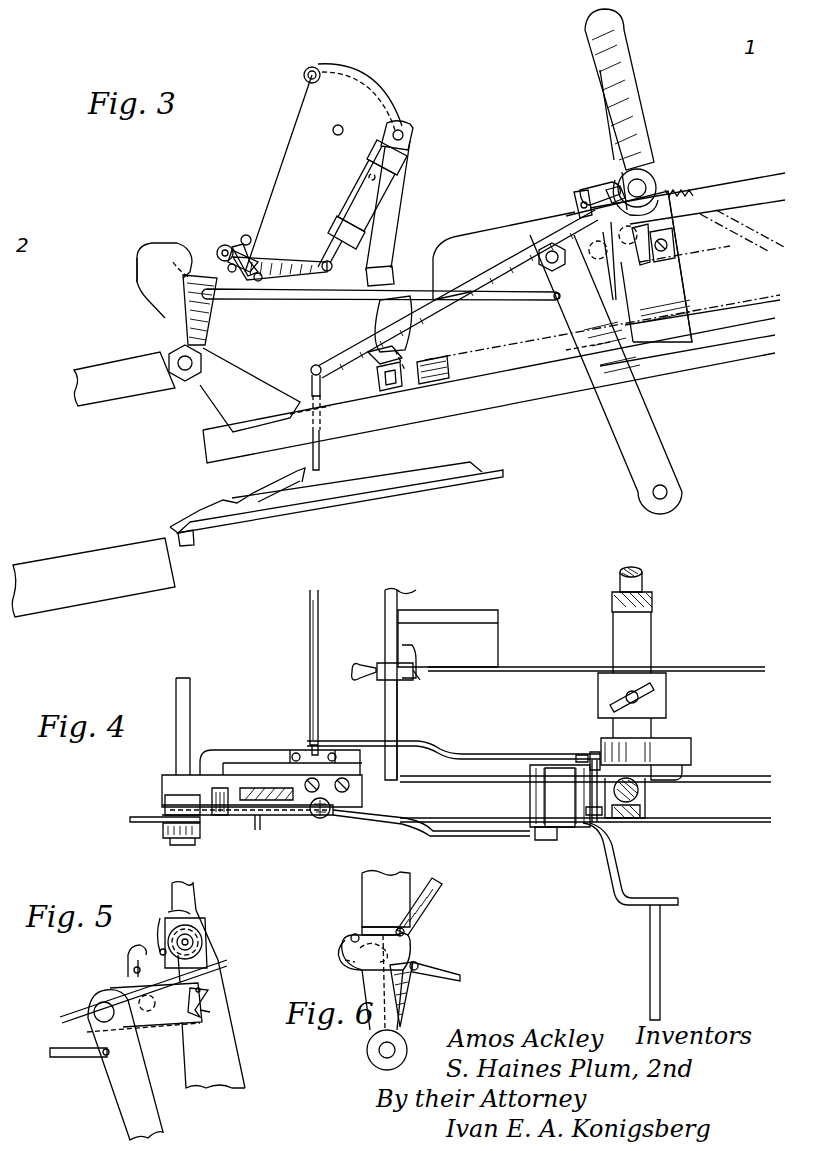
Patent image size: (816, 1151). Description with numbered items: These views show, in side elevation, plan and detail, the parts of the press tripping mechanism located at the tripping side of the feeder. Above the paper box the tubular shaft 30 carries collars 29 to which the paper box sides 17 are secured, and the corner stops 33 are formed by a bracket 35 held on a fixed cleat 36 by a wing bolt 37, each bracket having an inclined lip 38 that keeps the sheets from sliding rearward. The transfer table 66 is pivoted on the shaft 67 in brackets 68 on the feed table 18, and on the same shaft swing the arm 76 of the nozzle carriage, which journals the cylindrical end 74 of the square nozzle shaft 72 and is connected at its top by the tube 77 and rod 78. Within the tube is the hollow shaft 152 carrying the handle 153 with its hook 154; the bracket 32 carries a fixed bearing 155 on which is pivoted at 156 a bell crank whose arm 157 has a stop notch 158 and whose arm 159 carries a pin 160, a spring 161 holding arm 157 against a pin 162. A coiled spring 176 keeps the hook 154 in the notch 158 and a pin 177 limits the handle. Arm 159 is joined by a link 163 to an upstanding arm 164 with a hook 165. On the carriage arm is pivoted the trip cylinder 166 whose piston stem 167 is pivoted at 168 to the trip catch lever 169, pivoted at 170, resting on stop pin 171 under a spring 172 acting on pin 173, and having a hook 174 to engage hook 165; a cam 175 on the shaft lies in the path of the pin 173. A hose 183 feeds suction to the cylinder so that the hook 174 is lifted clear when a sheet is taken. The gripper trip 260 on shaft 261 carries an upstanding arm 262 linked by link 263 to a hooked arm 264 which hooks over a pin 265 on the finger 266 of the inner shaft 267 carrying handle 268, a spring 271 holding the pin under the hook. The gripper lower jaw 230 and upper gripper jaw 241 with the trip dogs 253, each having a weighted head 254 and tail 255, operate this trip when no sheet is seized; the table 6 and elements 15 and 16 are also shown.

In FIG. 3, the table 6 is at (93, 577).
In FIG. 3, the bar 15 is at (440, 352).
In FIG. 4, the bar 15 is at (448, 638).
In FIG. 3, the rail 16 is at (493, 372).
In FIG. 4, the rail 16 is at (415, 683).
In FIG. 3, the paper box side 17 is at (452, 252).
In FIG. 4, the paper box side 17 is at (508, 668).
In FIG. 3, the feed table 18 is at (210, 447).
In FIG. 4, the feed table 18 is at (245, 748).
In FIG. 4, the collar 29 is at (668, 690).
In FIG. 3, the tubular shaft 30 is at (642, 184).
In FIG. 4, the tubular shaft 30 is at (632, 675).
In FIG. 3, the fixed upright bearing 32 is at (629, 266).
In FIG. 4, the fixed upright bearing 32 is at (646, 753).
In FIG. 5, the fixed upright bearing 32 is at (211, 1021).
In FIG. 4, the corner stop 33 is at (395, 673).
In FIG. 4, the bracket 35 is at (416, 676).
In FIG. 3, the fixed cleat 36 is at (392, 392).
In FIG. 4, the fixed cleat 36 is at (400, 713).
In FIG. 4, the wing bolt 37 is at (360, 678).
In FIG. 3, the inclined lip 38 is at (390, 362).
In FIG. 4, the inclined lip 38 is at (405, 650).
In FIG. 3, the transfer table 66 is at (124, 379).
In FIG. 3, the shaft 67 is at (178, 372).
In FIG. 4, the shaft 67 is at (190, 692).
In FIG. 6, the shaft 67 is at (378, 1050).
In FIG. 3, the bracket 68 is at (250, 390).
In FIG. 4, the bracket 68 is at (268, 788).
In FIG. 3, the shaft 72 is at (334, 132).
In FIG. 3, the cylindrical end 74 is at (332, 128).
In FIG. 3, the swinging arm 76 is at (328, 213).
In FIG. 4, the swinging arm 76 is at (272, 815).
In FIG. 6, the swinging arm 76 is at (386, 951).
In FIG. 3, the tube 77 is at (303, 77).
In FIG. 3, the rod 78 is at (406, 135).
In FIG. 3, the hollow shaft 152 is at (645, 182).
In FIG. 4, the hollow shaft 152 is at (650, 600).
In FIG. 5, the hollow shaft 152 is at (208, 930).
In FIG. 3, the handle 153 is at (590, 27).
In FIG. 4, the handle 153 is at (635, 805).
In FIG. 5, the handle 153 is at (196, 890).
In FIG. 3, the hook 154 is at (690, 245).
In FIG. 5, the hook 154 is at (225, 960).
In FIG. 3, the fixed bearing 155 is at (688, 275).
In FIG. 4, the fixed bearing 155 is at (528, 768).
In FIG. 5, the fixed bearing 155 is at (215, 972).
In FIG. 3, the pivot 156 is at (552, 258).
In FIG. 4, the pivot 156 is at (553, 842).
In FIG. 5, the pivot 156 is at (100, 1005).
In FIG. 3, the bell crank arm 157 is at (610, 265).
In FIG. 4, the bell crank arm 157 is at (552, 780).
In FIG. 5, the bell crank arm 157 is at (160, 1020).
In FIG. 3, the stop notch 158 is at (636, 245).
In FIG. 5, the stop notch 158 is at (205, 1010).
In FIG. 3, the bell crank arm 159 is at (628, 413).
In FIG. 4, the bell crank arm 159 is at (592, 875).
In FIG. 5, the bell crank arm 159 is at (125, 1085).
In FIG. 3, the pin 160 is at (668, 490).
In FIG. 4, the pin 160 is at (662, 942).
In FIG. 3, the spring 161 is at (754, 338).
In FIG. 3, the pin 162 is at (722, 213).
In FIG. 5, the pin 162 is at (200, 988).
In FIG. 3, the link 163 is at (333, 302).
In FIG. 4, the link 163 is at (476, 836).
In FIG. 5, the link 163 is at (60, 1055).
In FIG. 6, the link 163 is at (440, 968).
In FIG. 3, the upstanding arm 164 is at (200, 315).
In FIG. 4, the upstanding arm 164 is at (175, 800).
In FIG. 6, the upstanding arm 164 is at (405, 993).
In FIG. 3, the hook 165 is at (183, 243).
In FIG. 4, the hook 165 is at (162, 806).
In FIG. 6, the hook 165 is at (392, 945).
In FIG. 3, the trip cylinder 166 is at (372, 190).
In FIG. 4, the trip cylinder 166 is at (322, 818).
In FIG. 3, the piston stem 167 is at (366, 258).
In FIG. 4, the piston stem 167 is at (318, 820).
In FIG. 3, the pivot 168 is at (388, 280).
In FIG. 3, the trip catch lever 169 is at (282, 258).
In FIG. 4, the trip catch lever 169 is at (240, 815).
In FIG. 6, the trip catch lever 169 is at (438, 886).
In FIG. 3, the pivot 170 is at (222, 250).
In FIG. 6, the pivot 170 is at (352, 935).
In FIG. 3, the stop pin 171 is at (230, 272).
In FIG. 6, the stop pin 171 is at (328, 966).
In FIG. 3, the spring 172 is at (250, 236).
In FIG. 3, the pin 173 is at (260, 282).
In FIG. 6, the pin 173 is at (404, 928).
In FIG. 3, the hook 174 is at (237, 258).
In FIG. 6, the hook 174 is at (400, 938).
In FIG. 3, the cam 175 is at (150, 256).
In FIG. 4, the cam 175 is at (130, 819).
In FIG. 6, the cam 175 is at (345, 942).
In FIG. 4, the spring 176 is at (675, 772).
In FIG. 5, the spring 176 is at (172, 912).
In FIG. 4, the pin 177 is at (600, 818).
In FIG. 5, the pin 177 is at (162, 938).
In FIG. 3, the hose 183 is at (382, 94).
In FIG. 3, the lower jaw 230 is at (478, 490).
In FIG. 3, the upper gripper jaw 241 is at (400, 490).
In FIG. 3, the trip dog 253 is at (210, 516).
In FIG. 3, the weighted head 254 is at (187, 548).
In FIG. 3, the tail 255 is at (300, 472).
In FIG. 3, the gripper trip 260 is at (322, 460).
In FIG. 4, the gripper trip 260 is at (308, 630).
In FIG. 3, the shaft 261 is at (312, 398).
In FIG. 4, the shaft 261 is at (318, 740).
In FIG. 3, the upstanding arm 262 is at (318, 402).
In FIG. 3, the link 263 is at (472, 282).
In FIG. 4, the link 263 is at (462, 742).
In FIG. 3, the hooked arm 264 is at (578, 200).
In FIG. 4, the hooked arm 264 is at (576, 756).
In FIG. 3, the pin 265 is at (588, 192).
In FIG. 4, the pin 265 is at (595, 752).
In FIG. 3, the finger 266 is at (610, 188).
In FIG. 4, the finger 266 is at (592, 815).
In FIG. 3, the shaft 267 is at (640, 178).
In FIG. 4, the shaft 267 is at (634, 568).
In FIG. 3, the handle 268 is at (600, 90).
In FIG. 4, the handle 268 is at (640, 820).
In FIG. 3, the spring 271 is at (690, 200).